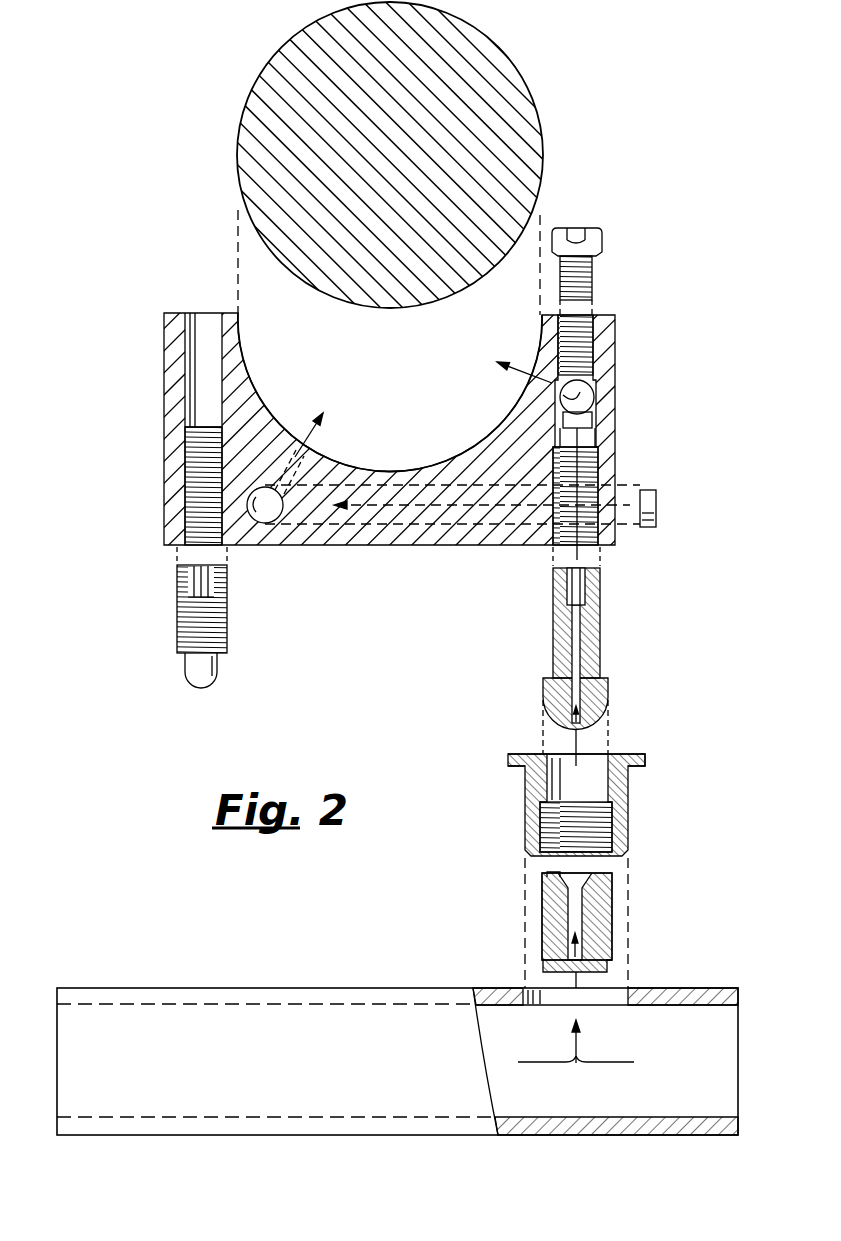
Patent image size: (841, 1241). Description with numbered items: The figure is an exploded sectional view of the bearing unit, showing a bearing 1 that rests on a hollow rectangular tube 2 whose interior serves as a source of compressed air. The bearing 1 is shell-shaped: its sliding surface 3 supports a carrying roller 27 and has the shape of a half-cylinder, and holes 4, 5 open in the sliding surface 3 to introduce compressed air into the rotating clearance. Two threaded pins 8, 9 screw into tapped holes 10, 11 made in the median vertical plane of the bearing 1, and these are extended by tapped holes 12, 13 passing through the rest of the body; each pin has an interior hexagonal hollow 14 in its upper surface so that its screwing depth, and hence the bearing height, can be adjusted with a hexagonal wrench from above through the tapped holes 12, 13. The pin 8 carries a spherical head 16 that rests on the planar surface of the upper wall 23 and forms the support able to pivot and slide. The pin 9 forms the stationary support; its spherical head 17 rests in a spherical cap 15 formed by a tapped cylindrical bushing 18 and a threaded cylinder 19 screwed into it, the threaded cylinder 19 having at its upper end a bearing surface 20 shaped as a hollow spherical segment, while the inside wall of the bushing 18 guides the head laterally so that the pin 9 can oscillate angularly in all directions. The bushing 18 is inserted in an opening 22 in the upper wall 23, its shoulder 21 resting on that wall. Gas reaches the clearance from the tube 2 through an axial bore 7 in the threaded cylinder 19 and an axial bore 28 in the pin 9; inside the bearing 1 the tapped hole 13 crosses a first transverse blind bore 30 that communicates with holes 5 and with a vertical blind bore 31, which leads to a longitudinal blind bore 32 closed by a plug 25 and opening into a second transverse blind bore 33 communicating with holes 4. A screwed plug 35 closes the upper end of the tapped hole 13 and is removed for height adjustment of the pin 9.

The bearing 1 is at (420, 408).
The hollow rectangular tube 2 is at (397, 1030).
The sliding surface 3 is at (432, 462).
The holes 4 is at (292, 447).
The holes 5 is at (543, 373).
The axial bore 7 is at (580, 913).
The pin 8 is at (223, 637).
The pin 9 is at (587, 656).
The tapped hole 10 is at (200, 547).
The tapped hole 11 is at (570, 548).
The tapped hole 12 is at (212, 320).
The tapped hole 13 is at (585, 425).
The interior hexagonal hollow 14 is at (210, 560).
The spherical cap 15 is at (600, 863).
The spherical head 16 is at (206, 686).
The spherical head 17 is at (603, 693).
The tapped cylindrical bushing 18 is at (611, 797).
The threaded cylinder 19 is at (606, 912).
The bearing surface 20 is at (560, 877).
The shoulder 21 is at (647, 760).
The opening 22 is at (612, 990).
The upper wall 23 is at (287, 988).
The plug 25 is at (657, 510).
The carrying roller 27 is at (527, 133).
The axial bore 28 is at (578, 648).
The first transverse blind bore 30 is at (583, 392).
The vertical blind bore 31 is at (563, 393).
The longitudinal blind bore 32 is at (386, 528).
The second transverse blind bore 33 is at (268, 523).
The screwed plug 35 is at (596, 278).